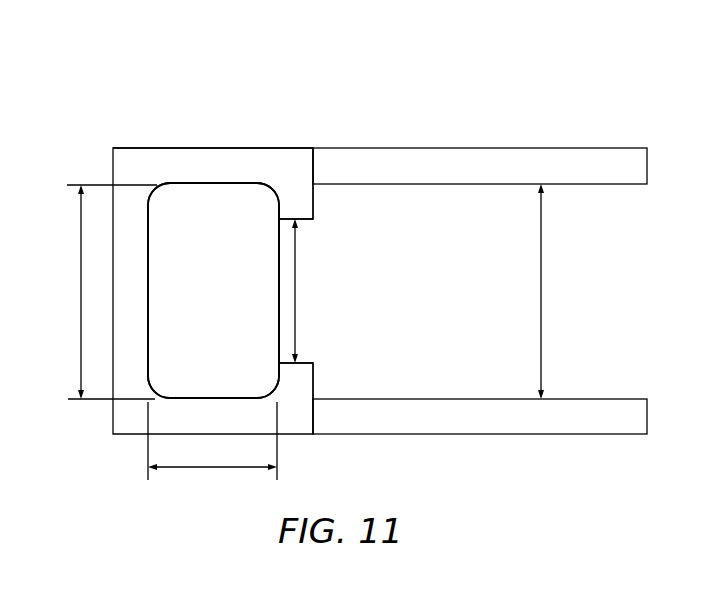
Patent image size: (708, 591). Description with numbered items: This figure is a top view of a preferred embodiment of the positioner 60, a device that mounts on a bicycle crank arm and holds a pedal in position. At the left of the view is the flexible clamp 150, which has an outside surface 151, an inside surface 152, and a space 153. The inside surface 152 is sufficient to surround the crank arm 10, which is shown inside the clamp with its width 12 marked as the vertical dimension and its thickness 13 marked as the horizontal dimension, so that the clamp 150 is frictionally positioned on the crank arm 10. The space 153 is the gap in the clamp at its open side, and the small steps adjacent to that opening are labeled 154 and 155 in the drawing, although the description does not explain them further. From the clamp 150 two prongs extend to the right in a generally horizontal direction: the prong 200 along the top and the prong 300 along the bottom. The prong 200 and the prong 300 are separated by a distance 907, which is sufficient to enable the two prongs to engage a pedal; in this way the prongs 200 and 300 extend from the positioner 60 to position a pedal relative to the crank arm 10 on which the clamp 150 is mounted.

The positioner 60 is at (286, 72).
The crank arm 10 is at (223, 207).
The width 12 is at (78, 296).
The thickness 13 is at (213, 468).
The flexible clamp 150 is at (127, 411).
The outside surface 151 is at (183, 148).
The inside surface 152 is at (150, 322).
The space 153 is at (298, 294).
The upper notch 154 is at (297, 204).
The lower notch 155 is at (297, 381).
The prong 200 is at (502, 162).
The prong 300 is at (504, 420).
The distance 907 is at (544, 292).